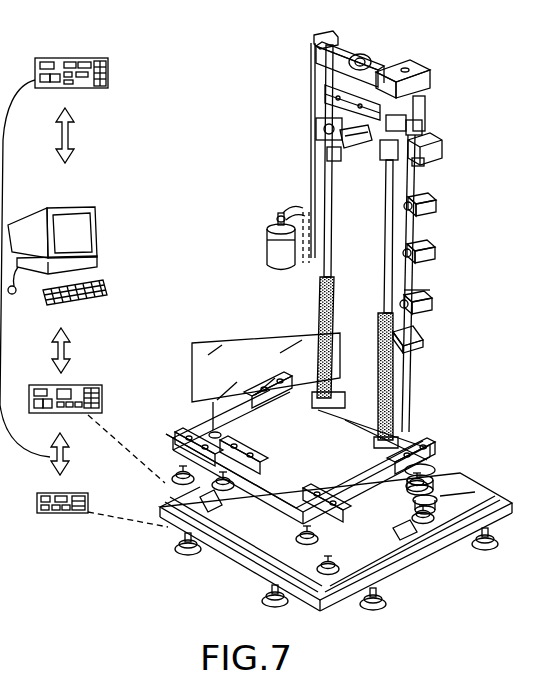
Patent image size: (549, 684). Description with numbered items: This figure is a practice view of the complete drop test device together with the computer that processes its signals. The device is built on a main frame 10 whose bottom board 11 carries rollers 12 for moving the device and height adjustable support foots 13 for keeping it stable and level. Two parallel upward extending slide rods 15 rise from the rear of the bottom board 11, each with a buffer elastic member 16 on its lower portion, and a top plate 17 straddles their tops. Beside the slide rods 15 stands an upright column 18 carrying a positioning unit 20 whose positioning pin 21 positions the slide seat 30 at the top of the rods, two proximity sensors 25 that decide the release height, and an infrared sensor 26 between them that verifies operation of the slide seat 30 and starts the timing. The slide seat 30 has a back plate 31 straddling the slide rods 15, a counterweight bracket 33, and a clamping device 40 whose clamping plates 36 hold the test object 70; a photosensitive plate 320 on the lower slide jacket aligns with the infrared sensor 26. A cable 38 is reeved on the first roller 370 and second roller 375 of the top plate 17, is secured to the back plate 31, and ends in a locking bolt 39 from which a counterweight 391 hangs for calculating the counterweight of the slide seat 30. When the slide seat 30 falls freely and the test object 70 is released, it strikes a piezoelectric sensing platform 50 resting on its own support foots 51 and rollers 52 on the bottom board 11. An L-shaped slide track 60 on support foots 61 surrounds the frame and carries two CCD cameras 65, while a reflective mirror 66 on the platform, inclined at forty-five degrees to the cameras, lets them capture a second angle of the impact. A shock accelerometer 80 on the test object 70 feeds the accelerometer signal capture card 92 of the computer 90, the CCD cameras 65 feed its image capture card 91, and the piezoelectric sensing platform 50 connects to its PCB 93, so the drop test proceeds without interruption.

The main frame 10 is at (303, 195).
The bottom board 11 is at (262, 437).
The rollers 12 is at (222, 447).
The height adjustable support foots 13 is at (200, 465).
The slide rods 15 is at (393, 278).
The buffer elastic members 16 is at (320, 307).
The top plate 17 is at (315, 60).
The upright column 18 is at (430, 292).
The positioning unit 20 is at (442, 139).
The positioning pin 21 is at (424, 163).
The proximity sensors 25 is at (436, 205).
The infrared sensor 26 is at (434, 249).
The slide seat 30 is at (404, 128).
The back plate 31 is at (425, 100).
The counterweight bracket 33 is at (337, 98).
The clamping plate 36 is at (322, 137).
The cable 38 is at (311, 168).
The locking bolt 39 is at (302, 222).
The clamping device 40 is at (398, 67).
The piezoelectric sensing platform 50 is at (420, 473).
The support foots 51 is at (438, 493).
The rollers 52 is at (476, 492).
The L-shaped slide track 60 is at (240, 553).
The support foots 61 is at (187, 552).
The CCD cameras 65 is at (217, 500).
The reflective mirror 66 is at (263, 335).
The test object 70 is at (337, 160).
The shock accelerometer 80 is at (344, 137).
The computer 90 is at (98, 240).
The image capture card 91 is at (102, 396).
The accelerometer signal capture card 92 is at (108, 80).
The PCB 93 is at (88, 500).
The photosensitive plate 320 is at (415, 133).
The first roller 370 is at (338, 38).
The second roller 375 is at (372, 64).
The counterweight 391 is at (267, 254).